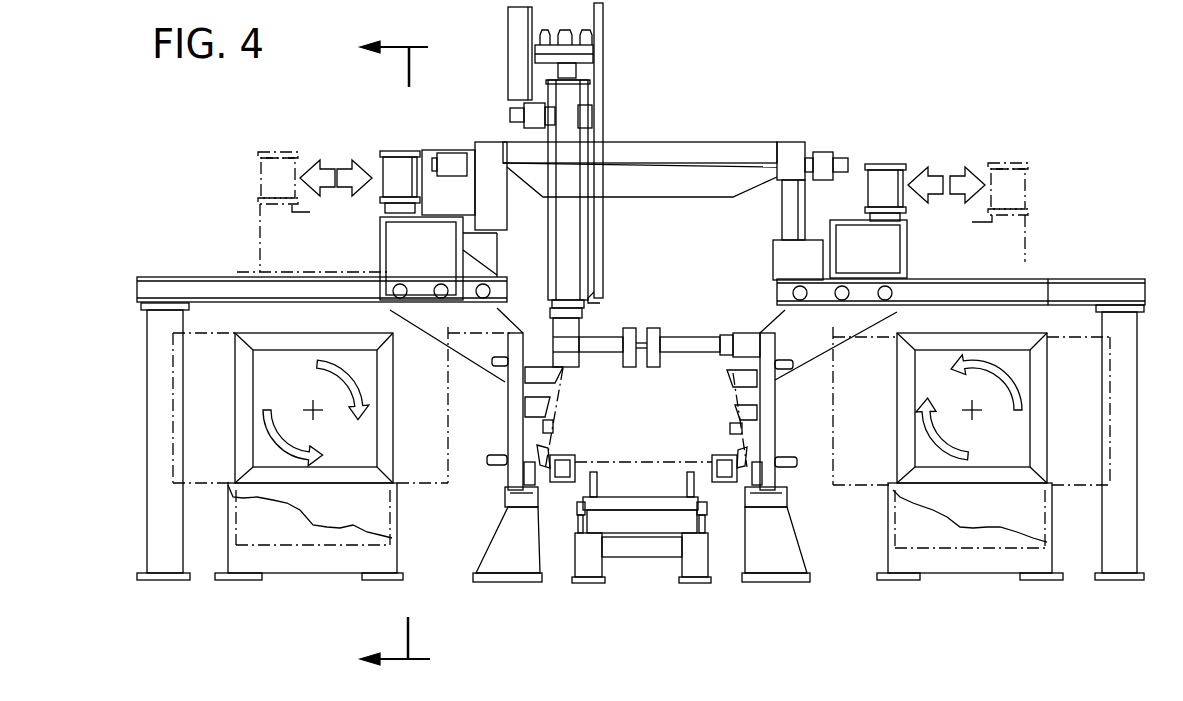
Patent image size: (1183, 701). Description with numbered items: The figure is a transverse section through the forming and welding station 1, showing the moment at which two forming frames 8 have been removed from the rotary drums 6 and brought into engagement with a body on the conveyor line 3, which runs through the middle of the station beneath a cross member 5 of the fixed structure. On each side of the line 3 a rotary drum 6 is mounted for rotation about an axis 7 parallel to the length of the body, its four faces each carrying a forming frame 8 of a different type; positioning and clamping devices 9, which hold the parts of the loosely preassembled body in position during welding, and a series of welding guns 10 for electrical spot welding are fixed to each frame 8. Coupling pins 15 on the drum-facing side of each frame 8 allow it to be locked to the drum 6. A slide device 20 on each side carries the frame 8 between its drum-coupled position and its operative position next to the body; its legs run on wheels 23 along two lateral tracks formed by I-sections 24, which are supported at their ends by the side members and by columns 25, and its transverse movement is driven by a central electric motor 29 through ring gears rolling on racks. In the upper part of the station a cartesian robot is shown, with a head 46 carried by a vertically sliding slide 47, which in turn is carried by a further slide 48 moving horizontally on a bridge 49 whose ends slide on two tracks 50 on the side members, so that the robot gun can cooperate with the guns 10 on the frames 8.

The forming and welding station 1 is at (955, 136).
The conveyor line 3 is at (630, 572).
The cross member 5 is at (395, 352).
The rotary drum 6 is at (1060, 416).
The axis of rotation 7 is at (470, 372).
The forming frame 8 is at (233, 330).
The positioning and clamping devices 9 is at (631, 368).
The welding gun 10 is at (700, 458).
The coupling pin 15 is at (498, 370).
The slide device 20 is at (366, 254).
The wheels 23 is at (410, 300).
The I-section 24 is at (1086, 292).
The column 25 is at (1128, 338).
The central electric motor 29 is at (408, 165).
The head 46 is at (577, 337).
The slide 47 is at (570, 243).
The further slide 48 is at (583, 150).
The bridge 49 is at (695, 160).
The track 50 is at (791, 212).